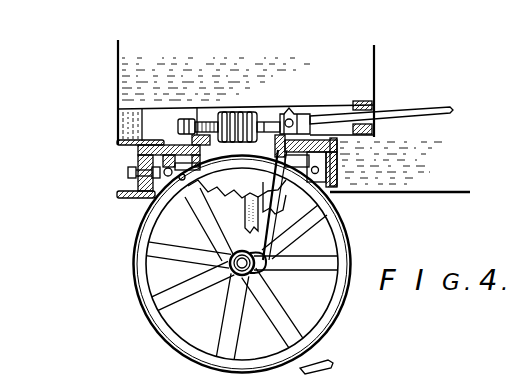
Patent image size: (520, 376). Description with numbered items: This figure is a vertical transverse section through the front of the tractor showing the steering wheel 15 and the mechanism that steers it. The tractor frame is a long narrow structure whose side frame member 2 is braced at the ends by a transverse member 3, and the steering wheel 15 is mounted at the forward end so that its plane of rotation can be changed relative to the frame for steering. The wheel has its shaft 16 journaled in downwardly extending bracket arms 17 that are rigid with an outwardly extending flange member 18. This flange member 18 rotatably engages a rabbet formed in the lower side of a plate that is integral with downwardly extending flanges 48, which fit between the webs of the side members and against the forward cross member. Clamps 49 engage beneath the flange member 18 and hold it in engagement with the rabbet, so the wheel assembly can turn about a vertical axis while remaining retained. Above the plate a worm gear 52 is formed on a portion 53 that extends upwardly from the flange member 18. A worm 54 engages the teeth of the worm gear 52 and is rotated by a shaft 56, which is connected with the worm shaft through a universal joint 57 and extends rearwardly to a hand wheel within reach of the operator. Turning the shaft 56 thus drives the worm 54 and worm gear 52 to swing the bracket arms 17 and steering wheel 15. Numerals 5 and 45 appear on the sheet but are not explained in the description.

The side frame member 2 is at (294, 116).
The transverse member 3 is at (125, 197).
The section line 5- 5 is at (123, 145).
The steering wheel 15 is at (348, 243).
The shaft 16 is at (198, 278).
The bracket arms 17 is at (200, 224).
The flange member 18 is at (182, 140).
The worm 45 is at (252, 112).
The flanges 48 is at (127, 158).
The clamps 49 is at (330, 172).
The worm gear 52 is at (192, 119).
The portion 53 is at (237, 188).
The worm 54 is at (250, 105).
The shaft 56 is at (425, 109).
The universal joint 57 is at (300, 113).